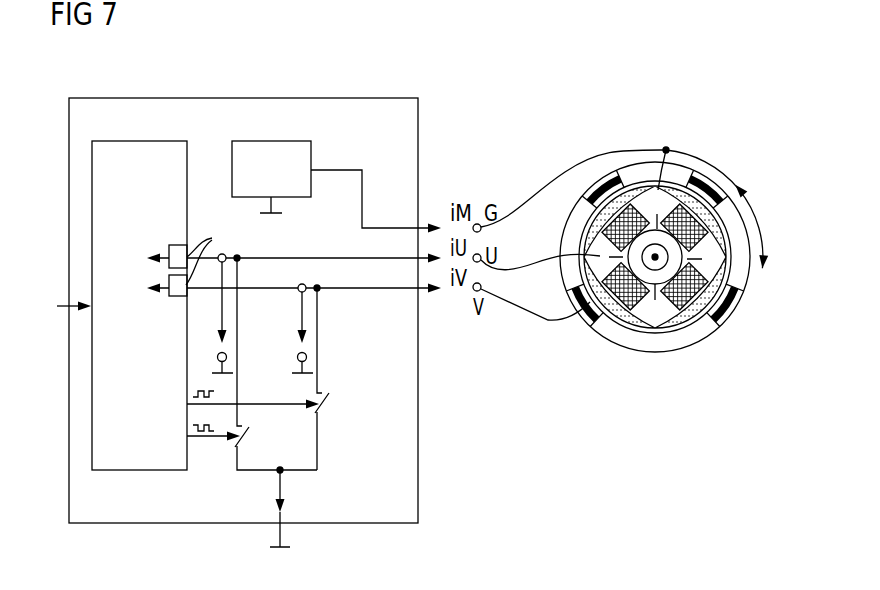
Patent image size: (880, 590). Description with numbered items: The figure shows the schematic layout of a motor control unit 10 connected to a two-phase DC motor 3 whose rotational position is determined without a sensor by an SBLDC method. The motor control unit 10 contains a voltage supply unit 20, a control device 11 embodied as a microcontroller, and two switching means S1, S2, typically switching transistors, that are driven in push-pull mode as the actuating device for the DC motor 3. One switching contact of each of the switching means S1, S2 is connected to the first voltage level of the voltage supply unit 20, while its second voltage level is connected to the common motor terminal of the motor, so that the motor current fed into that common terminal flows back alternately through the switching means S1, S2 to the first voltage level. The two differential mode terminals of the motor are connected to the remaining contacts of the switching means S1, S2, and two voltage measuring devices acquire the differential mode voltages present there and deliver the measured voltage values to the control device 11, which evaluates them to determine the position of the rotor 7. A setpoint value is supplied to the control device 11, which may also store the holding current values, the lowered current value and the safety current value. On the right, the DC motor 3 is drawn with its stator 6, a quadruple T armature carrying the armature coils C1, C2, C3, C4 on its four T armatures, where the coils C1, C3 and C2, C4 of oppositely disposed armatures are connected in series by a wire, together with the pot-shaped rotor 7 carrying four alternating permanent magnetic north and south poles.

The motor control unit 10 is at (418, 98).
The control device 11 is at (108, 141).
The voltage supply unit 20 is at (230, 141).
The DC motor 3 is at (648, 232).
The stator 6 is at (628, 202).
The rotor 7 is at (725, 325).
The armature coil C1 is at (710, 327).
The armature coil C2 is at (692, 180).
The armature coil C3 is at (580, 228).
The armature coil C4 is at (588, 303).
The switching means S1 is at (244, 442).
The switching means S2 is at (326, 408).